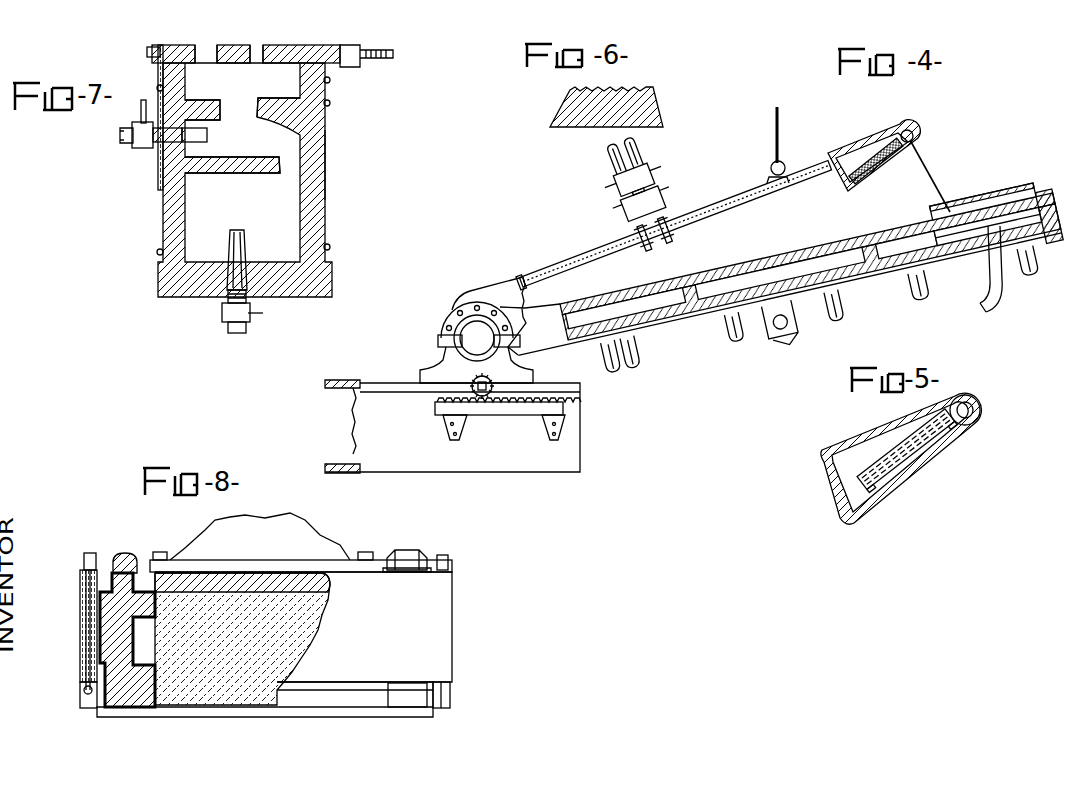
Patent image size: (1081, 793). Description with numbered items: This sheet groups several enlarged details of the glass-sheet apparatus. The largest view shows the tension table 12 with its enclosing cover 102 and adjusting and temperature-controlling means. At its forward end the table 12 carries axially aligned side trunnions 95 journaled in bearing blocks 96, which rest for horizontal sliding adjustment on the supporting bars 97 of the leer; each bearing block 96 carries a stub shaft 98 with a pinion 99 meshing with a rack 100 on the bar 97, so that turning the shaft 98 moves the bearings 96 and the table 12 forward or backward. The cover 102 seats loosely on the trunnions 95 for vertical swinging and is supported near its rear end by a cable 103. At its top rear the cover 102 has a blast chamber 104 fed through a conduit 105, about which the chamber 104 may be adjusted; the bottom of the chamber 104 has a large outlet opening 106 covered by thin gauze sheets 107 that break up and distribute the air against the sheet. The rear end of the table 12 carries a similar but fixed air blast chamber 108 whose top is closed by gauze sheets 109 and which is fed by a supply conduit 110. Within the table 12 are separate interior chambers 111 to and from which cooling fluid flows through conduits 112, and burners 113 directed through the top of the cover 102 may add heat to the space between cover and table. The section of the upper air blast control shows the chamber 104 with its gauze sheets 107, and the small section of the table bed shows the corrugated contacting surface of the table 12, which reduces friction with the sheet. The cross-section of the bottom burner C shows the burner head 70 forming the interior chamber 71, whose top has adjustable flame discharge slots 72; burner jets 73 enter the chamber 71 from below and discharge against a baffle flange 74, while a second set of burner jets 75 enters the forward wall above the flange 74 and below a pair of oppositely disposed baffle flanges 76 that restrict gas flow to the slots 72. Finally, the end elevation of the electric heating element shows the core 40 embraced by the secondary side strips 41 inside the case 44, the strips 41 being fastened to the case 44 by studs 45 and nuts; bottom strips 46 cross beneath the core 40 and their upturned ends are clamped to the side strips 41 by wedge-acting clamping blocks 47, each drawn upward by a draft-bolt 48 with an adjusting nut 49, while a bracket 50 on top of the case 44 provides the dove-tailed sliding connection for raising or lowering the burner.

In FIG. 6, the tension table 12 is at (573, 123).
In FIG. 4, the tension table 12 is at (813, 279).
In FIG. 8, the core 40 is at (230, 688).
In FIG. 8, the side strips 41 is at (133, 700).
In FIG. 8, the case 44 is at (420, 622).
In FIG. 8, the studs 45 is at (122, 553).
In FIG. 8, the bottom strips 46 is at (325, 710).
In FIG. 8, the clamping blocks 47 is at (84, 708).
In FIG. 8, the draft-bolt 48 is at (84, 620).
In FIG. 8, the adjusting nut 49 is at (88, 556).
In FIG. 8, the bracket 50 is at (297, 535).
In FIG. 7, the burner head 70 is at (318, 163).
In FIG. 7, the interior chamber 71 is at (242, 199).
In FIG. 7, the flame discharge slots 72 is at (205, 52).
In FIG. 7, the burner jets 73 is at (230, 273).
In FIG. 7, the baffle flange 74 is at (229, 174).
In FIG. 7, the burner jets 75 is at (177, 138).
In FIG. 7, the baffle flanges 76 is at (200, 100).
In FIG. 7, the bottom burner C is at (322, 181).
In FIG. 4, the side trunnions 95 is at (474, 338).
In FIG. 4, the bearing blocks 96 is at (443, 361).
In FIG. 4, the supporting bars 97 is at (365, 425).
In FIG. 4, the stub shaft 98 is at (483, 393).
In FIG. 4, the pinion 99 is at (468, 391).
In FIG. 4, the rack 100 is at (563, 407).
In FIG. 4, the cover 102 is at (711, 206).
In FIG. 4, the cable 103 is at (780, 126).
In FIG. 4, the blast chamber 104 is at (860, 152).
In FIG. 4, the conduit 105 is at (908, 128).
In FIG. 4, the outlet opening 106 is at (872, 168).
In FIG. 4, the gauze sheets 107 is at (920, 147).
In FIG. 4, the air blast chamber 108 is at (992, 209).
In FIG. 4, the gauze sheets 109 is at (979, 186).
In FIG. 4, the supply conduit 110 is at (1006, 290).
In FIG. 4, the interior chambers 111 is at (742, 236).
In FIG. 4, the conduits 112 is at (806, 248).
In FIG. 4, the burners 113 is at (647, 199).